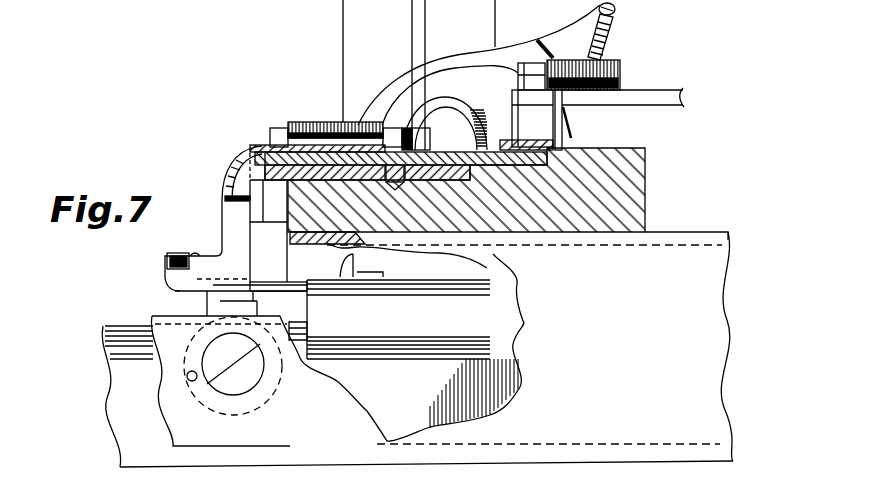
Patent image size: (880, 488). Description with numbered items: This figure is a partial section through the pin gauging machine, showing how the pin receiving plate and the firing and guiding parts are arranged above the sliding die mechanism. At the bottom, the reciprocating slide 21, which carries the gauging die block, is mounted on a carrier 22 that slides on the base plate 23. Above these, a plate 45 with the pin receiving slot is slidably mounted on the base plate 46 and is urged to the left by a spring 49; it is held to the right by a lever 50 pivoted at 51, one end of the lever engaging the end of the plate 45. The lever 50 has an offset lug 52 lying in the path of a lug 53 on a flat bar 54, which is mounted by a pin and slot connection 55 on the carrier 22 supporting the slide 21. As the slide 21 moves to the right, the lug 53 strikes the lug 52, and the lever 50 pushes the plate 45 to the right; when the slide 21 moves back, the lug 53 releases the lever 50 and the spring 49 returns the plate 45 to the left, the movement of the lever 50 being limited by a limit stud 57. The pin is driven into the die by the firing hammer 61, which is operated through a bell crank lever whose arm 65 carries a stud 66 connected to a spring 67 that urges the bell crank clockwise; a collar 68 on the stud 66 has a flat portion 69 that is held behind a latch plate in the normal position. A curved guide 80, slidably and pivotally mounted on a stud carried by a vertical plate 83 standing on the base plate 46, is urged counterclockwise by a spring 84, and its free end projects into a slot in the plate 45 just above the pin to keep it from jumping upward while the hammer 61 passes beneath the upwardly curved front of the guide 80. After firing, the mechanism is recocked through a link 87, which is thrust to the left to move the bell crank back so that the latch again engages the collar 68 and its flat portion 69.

The reciprocating slide 21 is at (278, 210).
The carrier 22 is at (487, 312).
The base plate 23 is at (480, 416).
The plate 45 is at (280, 157).
The base plate 46 is at (632, 193).
The spring 49 is at (330, 128).
The lever 50 is at (237, 257).
The pivot 51 is at (230, 382).
The offset lug 52 is at (222, 250).
The lug 53 is at (167, 265).
The flat bar 54 is at (325, 289).
The pin and slot connection 55 is at (377, 277).
The limit stud 57 is at (187, 378).
The firing hammer 61 is at (400, 180).
The arm of bell crank lever 65 is at (473, 137).
The stud 66 is at (533, 62).
The spring 67 is at (620, 80).
The collar 68 is at (527, 118).
The flat portion 69 is at (570, 110).
The curved guide 80 is at (403, 112).
The vertical plate 83 is at (447, 63).
The spring 84 is at (606, 43).
The link 87 is at (665, 102).